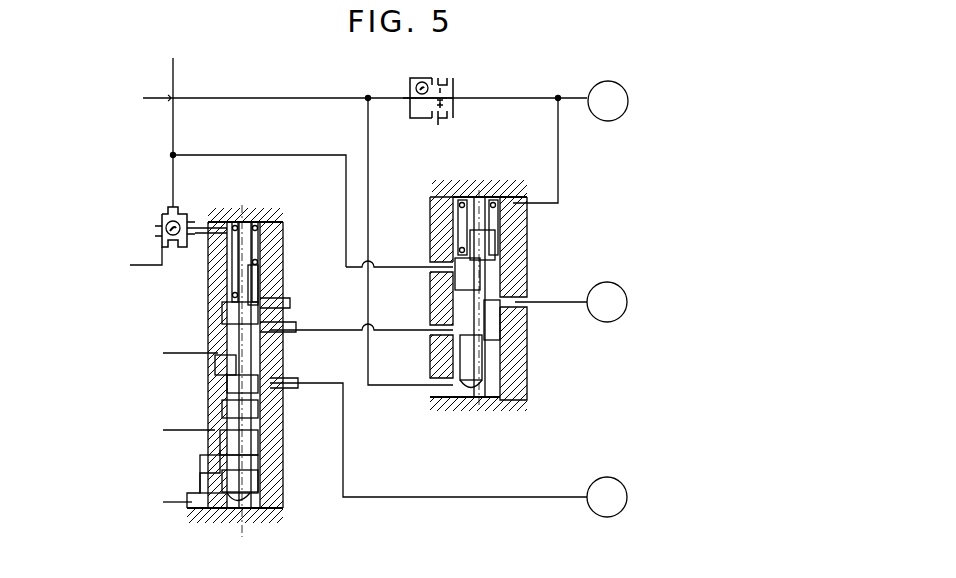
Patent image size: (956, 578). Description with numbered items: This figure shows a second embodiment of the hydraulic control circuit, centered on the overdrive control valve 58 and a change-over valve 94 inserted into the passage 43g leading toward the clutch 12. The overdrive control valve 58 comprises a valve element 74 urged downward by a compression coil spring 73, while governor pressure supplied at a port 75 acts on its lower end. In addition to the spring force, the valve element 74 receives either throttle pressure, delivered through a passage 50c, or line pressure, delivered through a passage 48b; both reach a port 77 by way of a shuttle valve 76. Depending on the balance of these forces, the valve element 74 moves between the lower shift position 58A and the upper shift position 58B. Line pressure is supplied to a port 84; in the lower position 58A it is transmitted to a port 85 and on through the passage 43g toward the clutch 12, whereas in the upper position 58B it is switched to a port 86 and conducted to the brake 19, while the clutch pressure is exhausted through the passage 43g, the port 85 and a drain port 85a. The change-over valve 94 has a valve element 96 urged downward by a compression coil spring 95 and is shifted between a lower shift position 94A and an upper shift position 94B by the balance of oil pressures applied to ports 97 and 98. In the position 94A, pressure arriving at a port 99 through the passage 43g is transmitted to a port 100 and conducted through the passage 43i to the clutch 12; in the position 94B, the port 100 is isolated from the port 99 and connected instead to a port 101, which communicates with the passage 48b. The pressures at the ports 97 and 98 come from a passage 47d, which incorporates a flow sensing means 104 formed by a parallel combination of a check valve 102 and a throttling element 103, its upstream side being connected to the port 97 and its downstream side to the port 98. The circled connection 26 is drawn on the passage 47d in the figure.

The passage 47d is at (287, 98).
The passage 48b is at (176, 127).
The pump connection 26 is at (608, 101).
The clutch 12 is at (607, 302).
The brake 19 is at (607, 497).
The check valve 102 is at (416, 77).
The throttling element 103 is at (445, 114).
The flow sensing means 104 is at (453, 79).
The port 98 is at (523, 197).
The shuttle valve 76 is at (164, 206).
The passage 50c is at (144, 271).
The port 77 is at (209, 240).
The overdrive control valve 58 is at (260, 376).
The lower shift position 58A is at (214, 527).
The upper shift position 58B is at (264, 526).
The compression coil spring 73 is at (263, 229).
The valve element 74 is at (260, 264).
The port 84 is at (205, 361).
The port 75 is at (184, 506).
The drain port 85a is at (287, 308).
The port 85 is at (285, 331).
The passage 43g is at (338, 332).
The port 86 is at (288, 386).
The change-over valve 94 is at (481, 294).
The lower shift position 94A is at (459, 414).
The upper shift position 94B is at (506, 413).
The compression coil spring 95 is at (492, 217).
The valve element 96 is at (488, 242).
The port 99 is at (432, 332).
The port 100 is at (526, 306).
The port 101 is at (426, 266).
The port 97 is at (428, 395).
The passage 43i is at (556, 301).